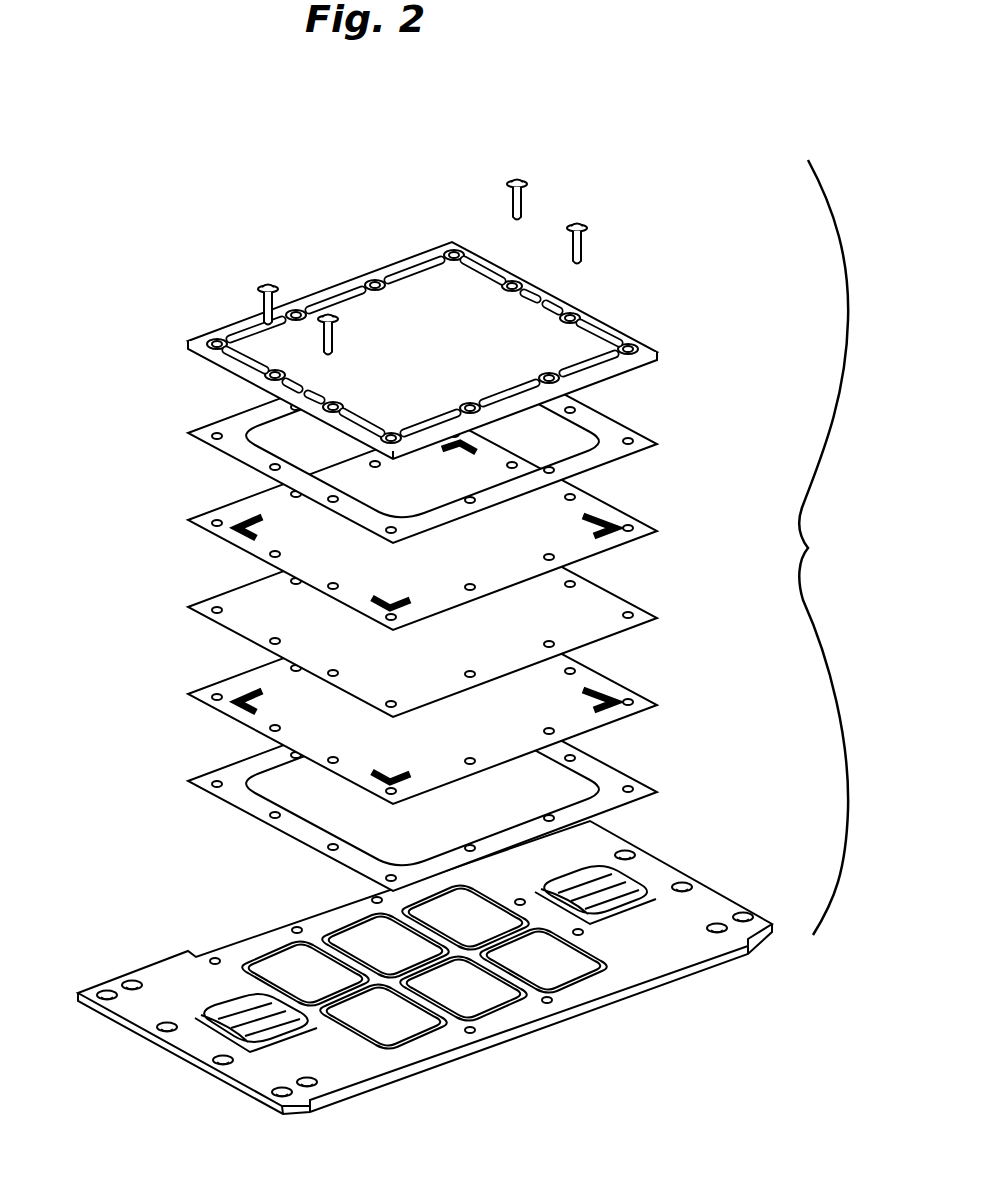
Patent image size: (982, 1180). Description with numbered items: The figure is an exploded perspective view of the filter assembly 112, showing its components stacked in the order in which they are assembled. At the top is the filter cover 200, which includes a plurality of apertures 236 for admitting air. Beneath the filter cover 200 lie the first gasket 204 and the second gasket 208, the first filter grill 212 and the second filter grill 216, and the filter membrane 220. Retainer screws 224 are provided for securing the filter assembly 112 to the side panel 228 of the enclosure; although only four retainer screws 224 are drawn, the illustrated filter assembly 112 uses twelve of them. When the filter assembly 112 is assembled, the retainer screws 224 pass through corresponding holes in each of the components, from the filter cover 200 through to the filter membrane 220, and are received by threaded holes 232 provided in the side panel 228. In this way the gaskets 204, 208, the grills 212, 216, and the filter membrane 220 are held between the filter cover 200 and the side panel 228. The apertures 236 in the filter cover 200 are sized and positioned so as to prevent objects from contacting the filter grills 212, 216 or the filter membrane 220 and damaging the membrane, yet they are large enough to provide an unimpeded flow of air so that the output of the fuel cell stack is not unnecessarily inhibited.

The filter assembly 112 is at (835, 547).
The filter cover 200 is at (608, 322).
The first gasket 204 is at (632, 434).
The second gasket 208 is at (634, 781).
The first filter grill 212 is at (234, 504).
The second filter grill 216 is at (208, 689).
The filter membrane 220 is at (636, 602).
The retainer screws 224 is at (513, 182).
The side panel 228 is at (125, 972).
The threaded holes 232 is at (292, 927).
The apertures 236 is at (343, 292).